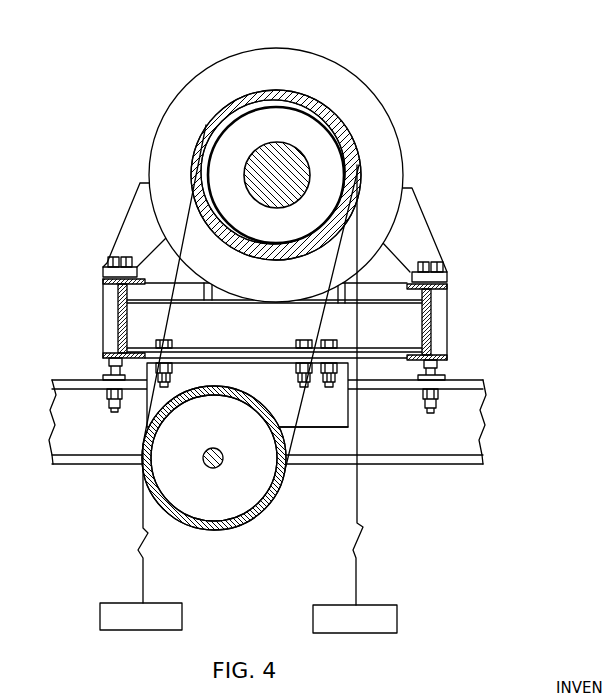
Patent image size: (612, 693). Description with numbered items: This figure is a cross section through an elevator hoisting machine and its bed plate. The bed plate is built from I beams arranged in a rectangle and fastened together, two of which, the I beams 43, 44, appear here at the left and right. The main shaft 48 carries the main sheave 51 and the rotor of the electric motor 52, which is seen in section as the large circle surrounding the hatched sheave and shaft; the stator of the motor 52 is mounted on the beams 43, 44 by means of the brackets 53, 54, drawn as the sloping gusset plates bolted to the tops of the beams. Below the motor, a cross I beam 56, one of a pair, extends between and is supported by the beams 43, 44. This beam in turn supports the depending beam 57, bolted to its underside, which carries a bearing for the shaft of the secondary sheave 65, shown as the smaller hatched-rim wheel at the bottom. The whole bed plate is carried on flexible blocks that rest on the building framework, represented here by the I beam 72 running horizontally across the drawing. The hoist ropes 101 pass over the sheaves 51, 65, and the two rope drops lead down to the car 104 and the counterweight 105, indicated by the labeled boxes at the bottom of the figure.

The I beam 43 is at (436, 325).
The I beam 44 is at (118, 315).
The main shaft 48 is at (282, 143).
The main sheave 51 is at (251, 92).
The electric motor 52 is at (346, 70).
The bracket 53 is at (417, 202).
The bracket 54 is at (130, 197).
The I beam 56 is at (256, 328).
The depending beam 57 is at (274, 387).
The secondary sheave 65 is at (267, 507).
The I beam 72 is at (484, 421).
The hoist ropes 101 is at (290, 444).
The car 104 is at (397, 619).
The counterweight 105 is at (100, 616).